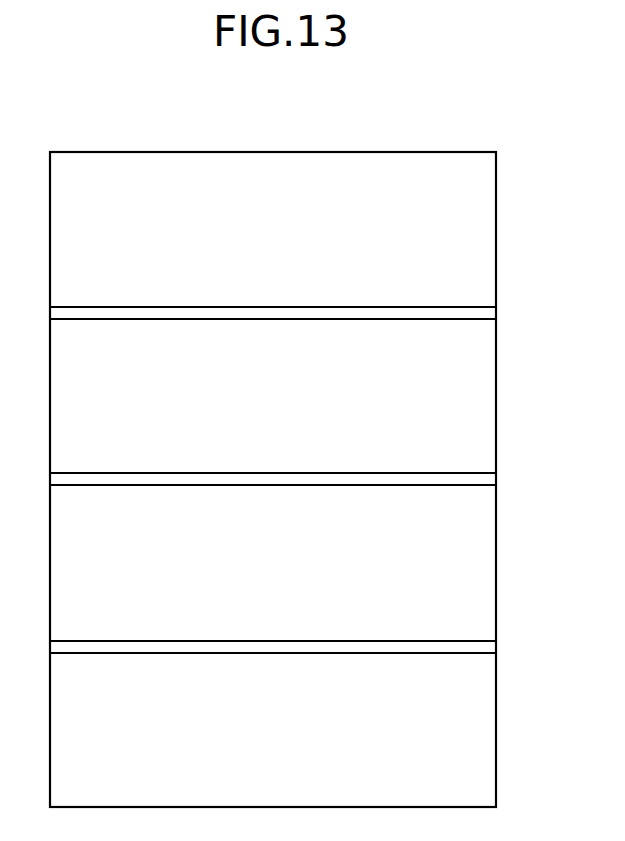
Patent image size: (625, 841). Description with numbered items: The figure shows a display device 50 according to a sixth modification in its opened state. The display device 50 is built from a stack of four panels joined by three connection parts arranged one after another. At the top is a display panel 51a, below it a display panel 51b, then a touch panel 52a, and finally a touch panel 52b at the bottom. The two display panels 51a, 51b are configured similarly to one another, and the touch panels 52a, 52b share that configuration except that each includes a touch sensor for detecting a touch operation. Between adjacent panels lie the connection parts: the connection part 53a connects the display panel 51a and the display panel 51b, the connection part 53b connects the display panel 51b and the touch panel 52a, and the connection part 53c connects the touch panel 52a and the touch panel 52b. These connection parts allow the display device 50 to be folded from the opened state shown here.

The display device 50 is at (548, 131).
The display panel 51a is at (496, 233).
The display panel 51b is at (496, 396).
The touch panel 52a is at (496, 566).
The touch panel 52b is at (496, 733).
The connection part 53a is at (496, 316).
The connection part 53b is at (496, 481).
The connection part 53c is at (496, 649).